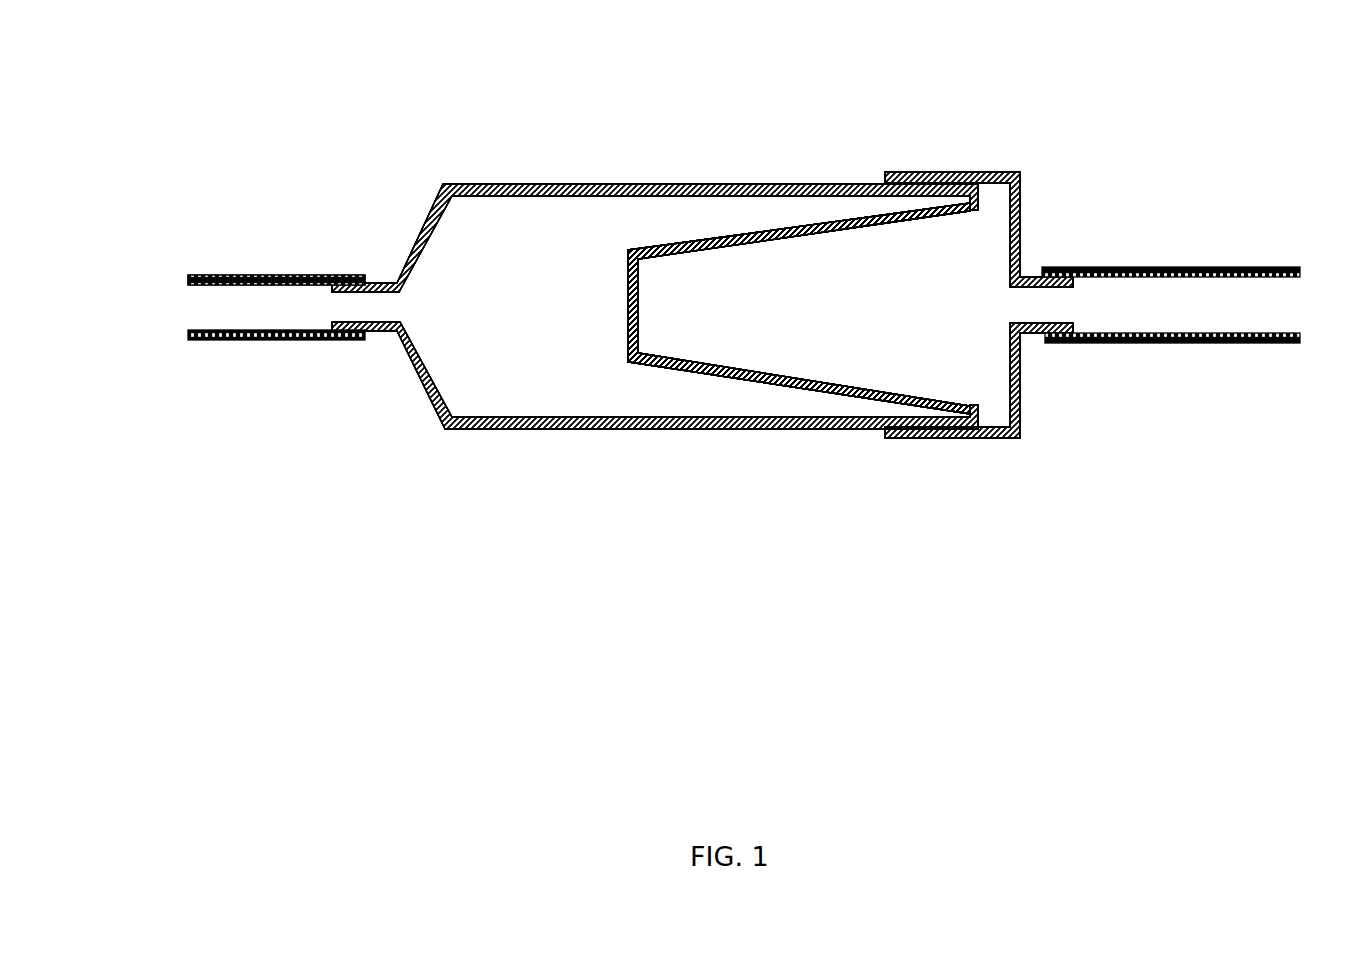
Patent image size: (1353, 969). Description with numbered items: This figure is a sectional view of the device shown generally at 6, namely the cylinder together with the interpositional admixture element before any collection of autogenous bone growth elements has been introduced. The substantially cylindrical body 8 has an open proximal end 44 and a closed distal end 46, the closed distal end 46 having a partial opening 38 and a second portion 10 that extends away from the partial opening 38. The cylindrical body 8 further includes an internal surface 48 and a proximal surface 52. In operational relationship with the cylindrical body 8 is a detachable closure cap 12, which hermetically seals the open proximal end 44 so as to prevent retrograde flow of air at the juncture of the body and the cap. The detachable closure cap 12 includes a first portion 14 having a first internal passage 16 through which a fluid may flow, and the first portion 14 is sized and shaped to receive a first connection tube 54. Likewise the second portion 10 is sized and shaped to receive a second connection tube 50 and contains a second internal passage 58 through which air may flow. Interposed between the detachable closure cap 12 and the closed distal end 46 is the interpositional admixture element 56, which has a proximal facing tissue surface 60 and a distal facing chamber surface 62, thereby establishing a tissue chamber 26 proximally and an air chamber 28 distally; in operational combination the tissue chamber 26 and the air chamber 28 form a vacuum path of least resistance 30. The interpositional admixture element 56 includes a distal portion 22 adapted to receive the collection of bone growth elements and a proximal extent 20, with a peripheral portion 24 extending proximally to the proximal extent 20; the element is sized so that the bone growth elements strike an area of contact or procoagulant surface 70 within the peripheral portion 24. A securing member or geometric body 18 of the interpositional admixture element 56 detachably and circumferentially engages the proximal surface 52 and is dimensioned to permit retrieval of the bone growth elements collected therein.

The cylinder and interpositional admixture element assembly 6 is at (262, 115).
The substantially cylindrical body 8 is at (590, 163).
The second portion 10 is at (382, 333).
The detachable closure cap 12 is at (1025, 232).
The first portion 14 is at (1033, 338).
The first internal passage 16 is at (1070, 305).
The securing member or geometric body 18 is at (890, 430).
The proximal extent 20 is at (988, 402).
The distal portion 22 is at (625, 313).
The peripheral portion 24 is at (888, 378).
The tissue chamber 26 is at (760, 238).
The air chamber 28 is at (760, 238).
The vacuum path of least resistance 30 is at (725, 232).
The partial opening 38 is at (427, 305).
The open proximal end 44 is at (963, 245).
The closed distal end 46 is at (413, 383).
The internal surface 48 is at (515, 200).
The second connection tube 50 is at (318, 273).
The proximal surface 52 is at (968, 183).
The first connection tube 54 is at (1237, 262).
The interpositional admixture element 56 is at (712, 382).
The second internal passage 58 is at (352, 305).
The proximal facing tissue surface 60 is at (648, 288).
The distal facing chamber surface 62 is at (605, 288).
The procoagulant surface 70 is at (790, 370).